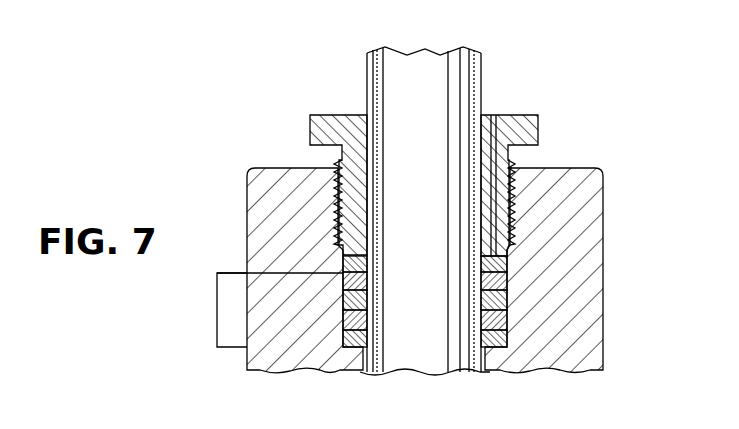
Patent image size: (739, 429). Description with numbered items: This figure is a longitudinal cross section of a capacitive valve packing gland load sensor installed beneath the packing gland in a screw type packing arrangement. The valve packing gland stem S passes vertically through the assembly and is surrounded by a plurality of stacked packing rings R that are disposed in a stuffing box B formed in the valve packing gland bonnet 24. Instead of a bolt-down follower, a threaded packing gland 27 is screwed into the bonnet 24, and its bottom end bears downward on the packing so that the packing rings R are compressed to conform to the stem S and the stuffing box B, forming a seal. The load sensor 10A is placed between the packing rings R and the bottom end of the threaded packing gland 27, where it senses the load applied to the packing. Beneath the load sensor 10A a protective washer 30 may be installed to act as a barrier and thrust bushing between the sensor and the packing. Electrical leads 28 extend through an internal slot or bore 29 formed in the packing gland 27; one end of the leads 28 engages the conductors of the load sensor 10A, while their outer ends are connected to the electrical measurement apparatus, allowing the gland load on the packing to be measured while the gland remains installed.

The valve packing gland stem S is at (372, 83).
The electrical leads 28 is at (493, 114).
The threaded packing gland 27 is at (340, 200).
The valve packing gland bonnet 24 is at (255, 240).
The internal slot or bore 29 is at (510, 176).
The load sensor 10A is at (505, 262).
The protective washer 30 is at (507, 270).
The stuffing box B is at (507, 326).
The packing rings R is at (217, 312).